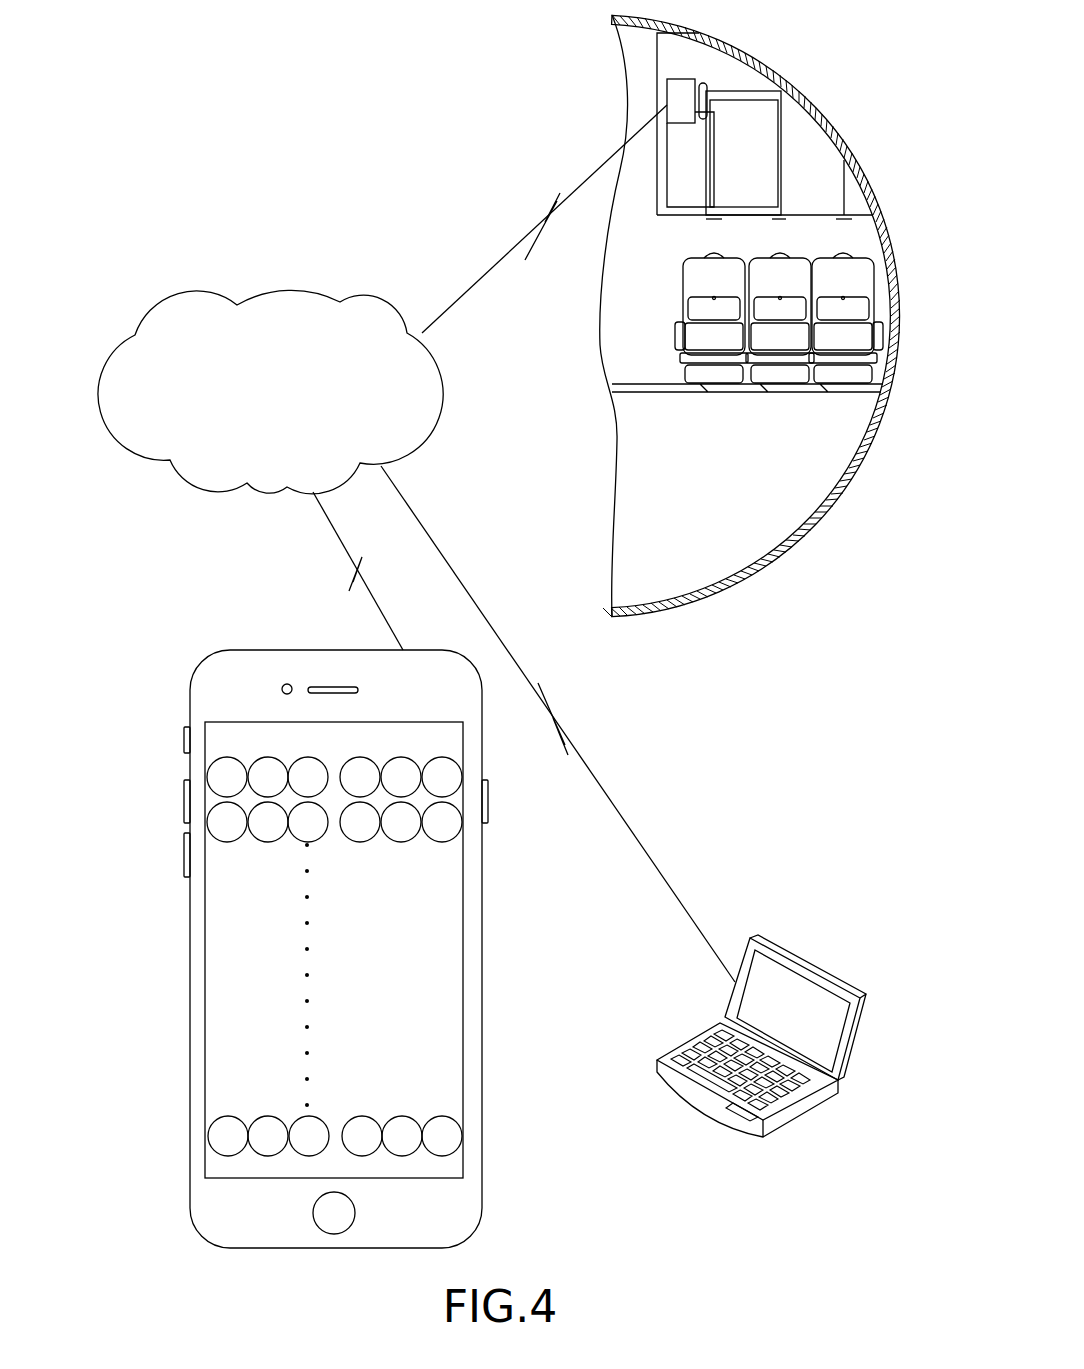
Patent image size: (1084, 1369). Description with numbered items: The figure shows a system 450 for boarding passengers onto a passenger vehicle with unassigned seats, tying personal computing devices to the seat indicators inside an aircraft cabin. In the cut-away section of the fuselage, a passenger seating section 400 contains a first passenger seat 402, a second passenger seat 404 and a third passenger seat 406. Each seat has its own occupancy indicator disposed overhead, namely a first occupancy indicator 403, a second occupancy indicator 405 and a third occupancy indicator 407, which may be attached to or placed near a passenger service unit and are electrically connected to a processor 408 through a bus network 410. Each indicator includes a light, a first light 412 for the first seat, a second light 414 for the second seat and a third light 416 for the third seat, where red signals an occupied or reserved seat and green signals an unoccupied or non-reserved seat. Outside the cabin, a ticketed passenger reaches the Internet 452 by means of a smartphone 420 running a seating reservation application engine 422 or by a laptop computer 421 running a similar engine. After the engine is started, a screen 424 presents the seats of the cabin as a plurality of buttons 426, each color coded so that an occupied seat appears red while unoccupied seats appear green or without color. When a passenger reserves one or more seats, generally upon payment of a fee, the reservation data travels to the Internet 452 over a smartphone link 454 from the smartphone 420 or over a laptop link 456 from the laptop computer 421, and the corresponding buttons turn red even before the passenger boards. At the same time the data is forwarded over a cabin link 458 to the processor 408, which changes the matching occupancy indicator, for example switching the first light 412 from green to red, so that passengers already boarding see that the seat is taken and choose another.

The passenger seating section 400 is at (624, 438).
The first passenger seat 402 is at (697, 287).
The first occupancy indicator 403 is at (715, 219).
The second passenger seat 404 is at (763, 287).
The second occupancy indicator 405 is at (779, 219).
The third passenger seat 406 is at (826, 287).
The third occupancy indicator 407 is at (845, 219).
The processor 408 is at (681, 79).
The bus network 410 is at (709, 87).
The first light 412 is at (720, 222).
The second light 414 is at (784, 222).
The third light 416 is at (849, 222).
The smartphone 420 is at (163, 734).
The laptop computer 421 is at (845, 980).
The seating reservation application engine 422 is at (313, 751).
The screen 424 is at (428, 997).
The plurality of buttons 426 is at (252, 838).
The system 450 is at (172, 148).
The Internet 452 is at (131, 333).
The smartphone link 454 is at (378, 607).
The laptop link 456 is at (622, 813).
The cabin link 458 is at (457, 297).